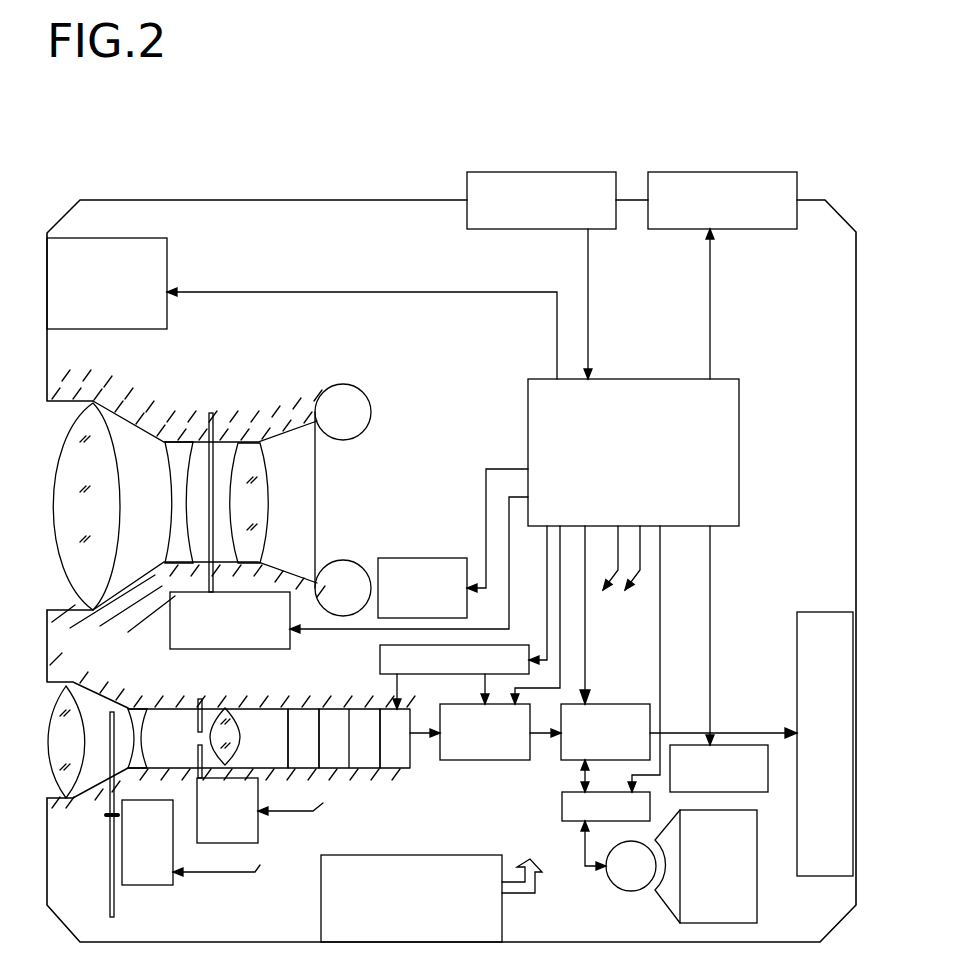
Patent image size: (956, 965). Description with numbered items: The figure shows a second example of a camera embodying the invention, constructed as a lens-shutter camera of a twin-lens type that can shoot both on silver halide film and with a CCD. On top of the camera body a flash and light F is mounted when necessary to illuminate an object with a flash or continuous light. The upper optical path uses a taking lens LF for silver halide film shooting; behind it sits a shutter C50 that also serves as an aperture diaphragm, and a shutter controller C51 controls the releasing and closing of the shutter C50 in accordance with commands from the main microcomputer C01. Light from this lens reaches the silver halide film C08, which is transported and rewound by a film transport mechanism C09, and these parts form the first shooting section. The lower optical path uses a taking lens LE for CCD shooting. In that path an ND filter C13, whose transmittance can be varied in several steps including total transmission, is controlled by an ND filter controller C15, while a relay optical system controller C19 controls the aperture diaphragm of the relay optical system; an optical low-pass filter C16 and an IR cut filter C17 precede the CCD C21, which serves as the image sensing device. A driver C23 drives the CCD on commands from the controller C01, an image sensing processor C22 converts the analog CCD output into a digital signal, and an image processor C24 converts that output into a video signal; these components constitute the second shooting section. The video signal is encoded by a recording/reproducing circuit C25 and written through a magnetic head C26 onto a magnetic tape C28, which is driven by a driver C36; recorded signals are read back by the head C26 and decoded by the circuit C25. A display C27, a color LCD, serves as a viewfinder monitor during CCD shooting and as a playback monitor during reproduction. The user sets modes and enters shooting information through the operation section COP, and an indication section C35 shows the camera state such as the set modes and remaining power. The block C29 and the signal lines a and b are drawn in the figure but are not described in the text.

The flash and light F is at (107, 283).
The taking lens for silver halide film shooting LF is at (160, 406).
The taking lens for CCD shooting LE is at (128, 696).
The shutter C50 is at (220, 416).
The shutter controller C51 is at (230, 620).
The silver halide film C08 is at (317, 500).
The film transport mechanism C09 is at (422, 588).
The operation section COP is at (541, 200).
The indication section C35 is at (722, 200).
The controller C01 is at (633, 452).
The driver C23 is at (454, 660).
The image sensing processor C22 is at (485, 732).
The image processor C24 is at (605, 732).
The recording/reproducing circuit C25 is at (606, 807).
The driver C36 is at (719, 768).
The display C27 is at (825, 744).
The magnetic tape C28 is at (706, 866).
The magnetic head C26 is at (605, 880).
The power supply C29 is at (431, 898).
The relay optical system controller C19 is at (227, 810).
The ND filter controller C15 is at (167, 885).
The ND filter C13 is at (115, 897).
The optical low-pass filter C16 is at (308, 705).
The IR cut filter C17 is at (333, 708).
The CCD C21 is at (392, 770).
The control signal a is at (438, 670).
The control signal b is at (406, 701).